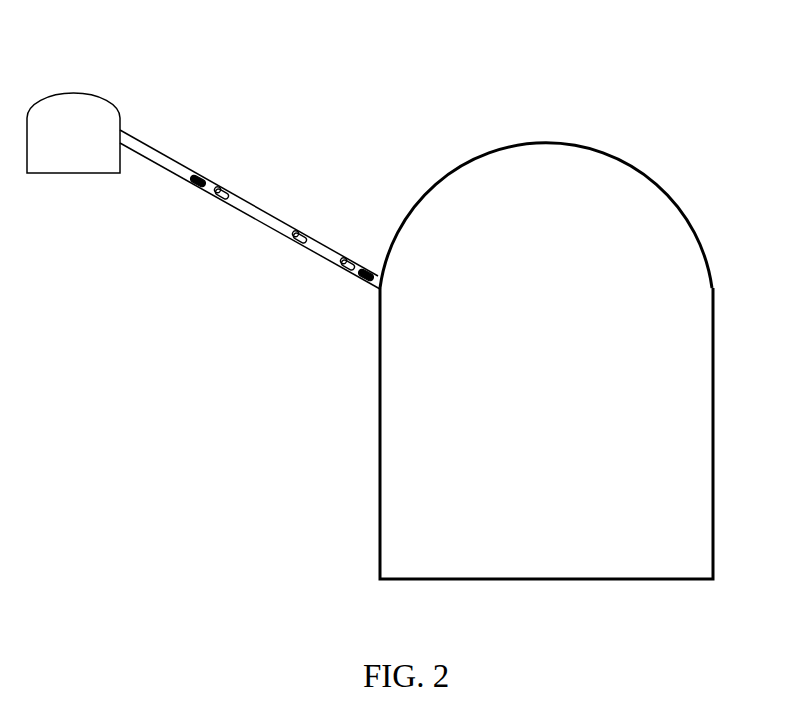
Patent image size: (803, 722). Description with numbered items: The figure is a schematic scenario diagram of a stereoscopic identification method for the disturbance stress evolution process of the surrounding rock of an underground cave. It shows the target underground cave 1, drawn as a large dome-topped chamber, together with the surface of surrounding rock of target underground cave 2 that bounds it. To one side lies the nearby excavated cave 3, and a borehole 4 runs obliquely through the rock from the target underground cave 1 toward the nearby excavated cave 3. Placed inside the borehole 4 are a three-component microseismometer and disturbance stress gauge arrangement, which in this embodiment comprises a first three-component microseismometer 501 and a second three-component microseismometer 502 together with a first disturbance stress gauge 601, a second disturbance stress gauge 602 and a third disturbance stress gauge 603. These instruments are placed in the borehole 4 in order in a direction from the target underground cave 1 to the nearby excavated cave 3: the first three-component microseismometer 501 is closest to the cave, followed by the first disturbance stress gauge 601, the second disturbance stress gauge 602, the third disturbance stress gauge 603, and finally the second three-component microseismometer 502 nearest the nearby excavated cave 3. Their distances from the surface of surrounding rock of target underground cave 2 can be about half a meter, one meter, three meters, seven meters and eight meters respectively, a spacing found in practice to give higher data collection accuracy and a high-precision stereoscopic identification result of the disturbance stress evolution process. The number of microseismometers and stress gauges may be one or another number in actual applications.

The target underground cave 1 is at (585, 320).
The surface of surrounding rock of target underground cave 2 is at (522, 143).
The nearby excavated cave 3 is at (65, 120).
The borehole 4 is at (147, 152).
The first three-component microseismometer 501 is at (368, 274).
The second three-component microseismometer 502 is at (200, 176).
The first disturbance stress gauge 601 is at (342, 270).
The second disturbance stress gauge 602 is at (297, 242).
The third disturbance stress gauge 603 is at (218, 194).